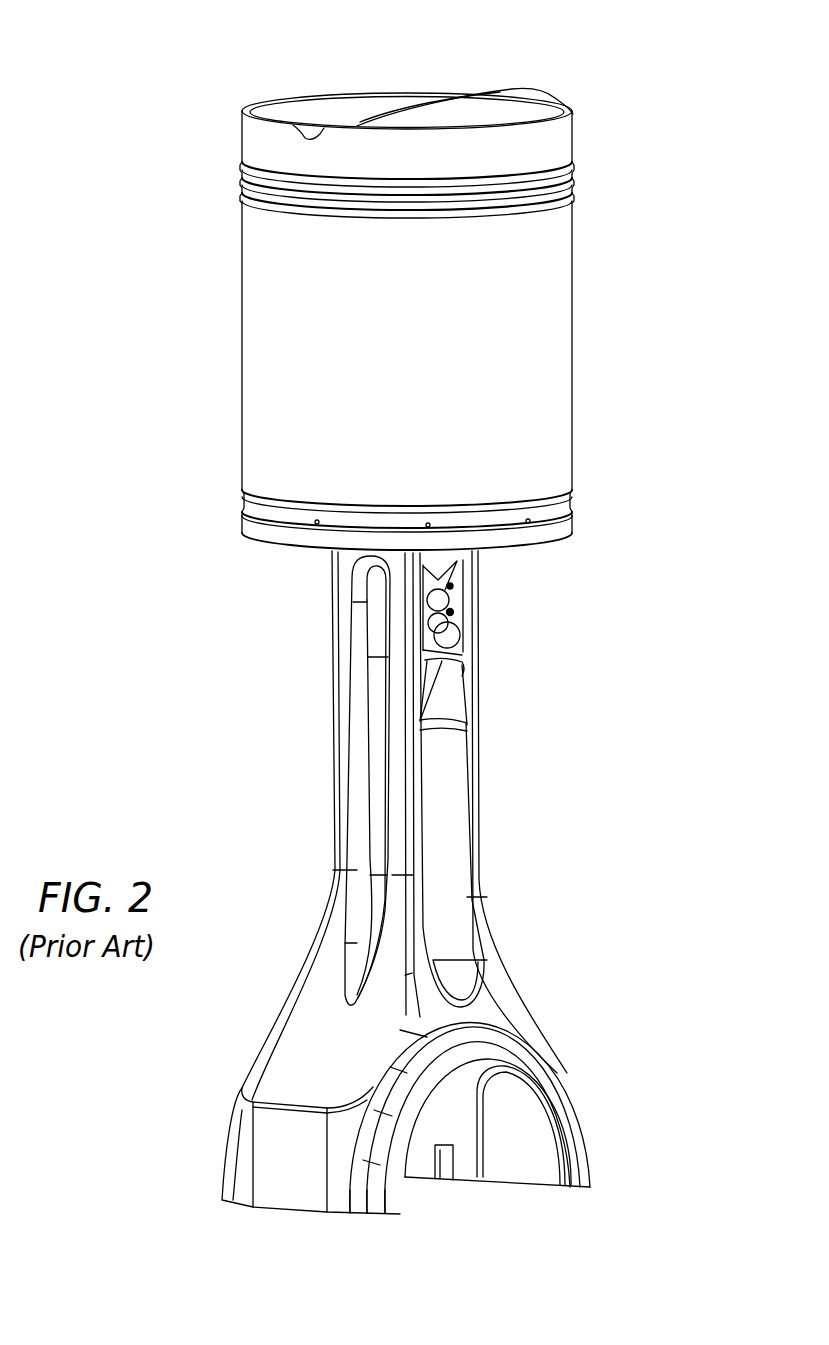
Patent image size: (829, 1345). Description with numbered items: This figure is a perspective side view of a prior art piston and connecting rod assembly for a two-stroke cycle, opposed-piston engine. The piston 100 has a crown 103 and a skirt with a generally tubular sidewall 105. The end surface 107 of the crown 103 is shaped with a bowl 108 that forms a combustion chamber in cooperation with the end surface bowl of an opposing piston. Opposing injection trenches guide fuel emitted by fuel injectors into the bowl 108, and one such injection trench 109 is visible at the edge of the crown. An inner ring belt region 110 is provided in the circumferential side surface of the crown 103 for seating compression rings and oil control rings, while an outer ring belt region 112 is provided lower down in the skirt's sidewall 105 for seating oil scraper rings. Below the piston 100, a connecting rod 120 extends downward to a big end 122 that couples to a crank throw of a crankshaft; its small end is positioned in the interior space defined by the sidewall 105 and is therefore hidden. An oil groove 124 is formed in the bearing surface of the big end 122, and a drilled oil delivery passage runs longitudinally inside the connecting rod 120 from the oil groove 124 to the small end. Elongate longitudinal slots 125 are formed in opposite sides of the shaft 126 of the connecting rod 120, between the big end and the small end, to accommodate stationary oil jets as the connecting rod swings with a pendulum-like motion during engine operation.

The piston 100 is at (627, 310).
The crown 103 is at (583, 113).
The sidewall 105 is at (572, 377).
The end surface 107 is at (320, 90).
The bowl 108 is at (431, 102).
The injection trench 109 is at (311, 136).
The inner ring belt region 110 is at (237, 155).
The outer ring belt region 112 is at (238, 477).
The connecting rod 120 is at (510, 824).
The big end 122 is at (577, 1120).
The oil groove 124 is at (473, 1110).
The longitudinal slots 125 is at (375, 830).
The shaft 126 is at (343, 585).